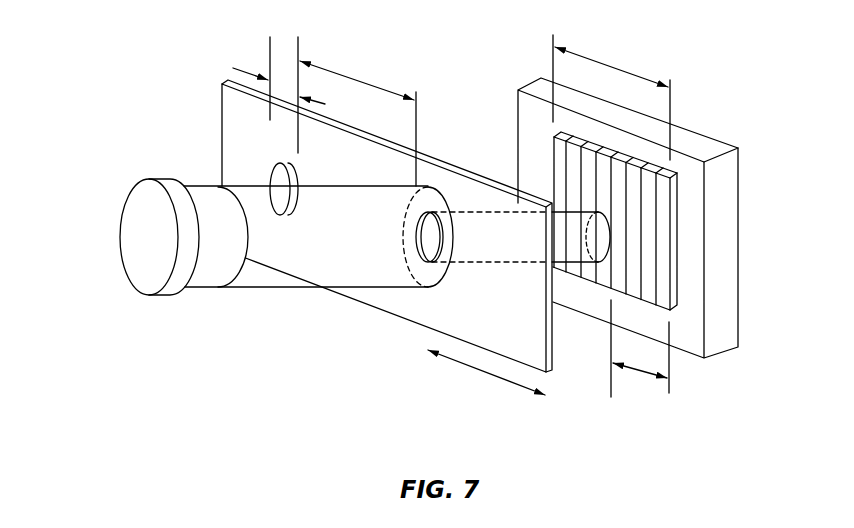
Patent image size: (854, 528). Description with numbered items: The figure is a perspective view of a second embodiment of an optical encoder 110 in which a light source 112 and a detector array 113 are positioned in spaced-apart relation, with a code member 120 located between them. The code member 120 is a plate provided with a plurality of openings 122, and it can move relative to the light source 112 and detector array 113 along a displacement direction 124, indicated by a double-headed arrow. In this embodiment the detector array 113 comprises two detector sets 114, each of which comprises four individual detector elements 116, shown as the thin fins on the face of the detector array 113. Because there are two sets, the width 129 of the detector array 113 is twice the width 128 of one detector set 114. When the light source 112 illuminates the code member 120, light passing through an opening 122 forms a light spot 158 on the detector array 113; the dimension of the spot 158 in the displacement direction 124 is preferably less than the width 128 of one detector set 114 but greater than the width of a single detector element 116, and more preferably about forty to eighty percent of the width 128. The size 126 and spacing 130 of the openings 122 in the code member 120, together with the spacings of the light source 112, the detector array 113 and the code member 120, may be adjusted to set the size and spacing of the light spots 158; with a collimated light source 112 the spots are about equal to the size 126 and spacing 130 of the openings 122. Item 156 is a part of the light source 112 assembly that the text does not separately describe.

The optical encoder 110 is at (142, 31).
The light source 112 is at (124, 186).
The detector array 113 is at (679, 175).
The detector set 114 is at (670, 409).
The detector element 116 is at (661, 234).
The code member 120 is at (219, 121).
The opening 122 is at (318, 193).
The displacement direction 124 is at (483, 371).
The size of the openings 126 is at (249, 73).
The width of the detector set 128 is at (642, 375).
The width of the detector array 129 is at (613, 63).
The spacing of the openings 130 is at (348, 73).
The shaft 156 is at (250, 288).
The light spot 158 is at (608, 250).